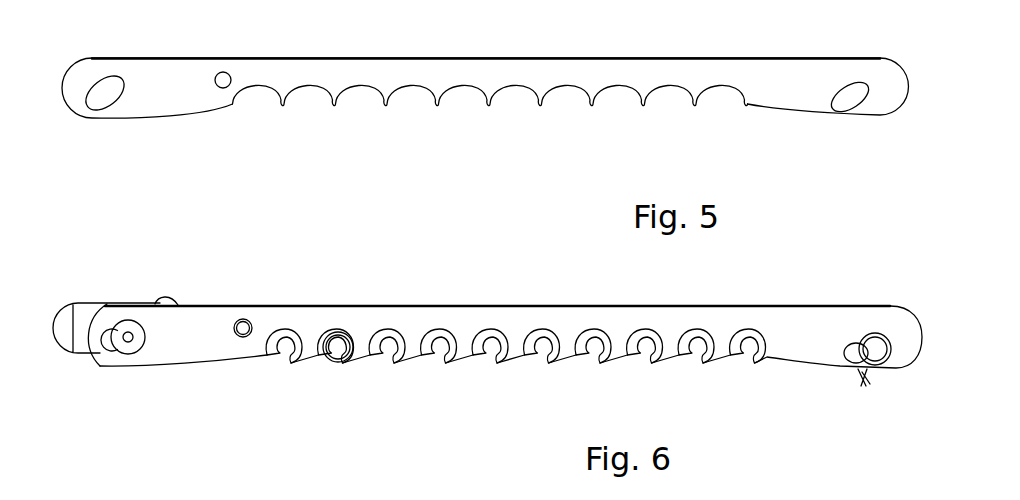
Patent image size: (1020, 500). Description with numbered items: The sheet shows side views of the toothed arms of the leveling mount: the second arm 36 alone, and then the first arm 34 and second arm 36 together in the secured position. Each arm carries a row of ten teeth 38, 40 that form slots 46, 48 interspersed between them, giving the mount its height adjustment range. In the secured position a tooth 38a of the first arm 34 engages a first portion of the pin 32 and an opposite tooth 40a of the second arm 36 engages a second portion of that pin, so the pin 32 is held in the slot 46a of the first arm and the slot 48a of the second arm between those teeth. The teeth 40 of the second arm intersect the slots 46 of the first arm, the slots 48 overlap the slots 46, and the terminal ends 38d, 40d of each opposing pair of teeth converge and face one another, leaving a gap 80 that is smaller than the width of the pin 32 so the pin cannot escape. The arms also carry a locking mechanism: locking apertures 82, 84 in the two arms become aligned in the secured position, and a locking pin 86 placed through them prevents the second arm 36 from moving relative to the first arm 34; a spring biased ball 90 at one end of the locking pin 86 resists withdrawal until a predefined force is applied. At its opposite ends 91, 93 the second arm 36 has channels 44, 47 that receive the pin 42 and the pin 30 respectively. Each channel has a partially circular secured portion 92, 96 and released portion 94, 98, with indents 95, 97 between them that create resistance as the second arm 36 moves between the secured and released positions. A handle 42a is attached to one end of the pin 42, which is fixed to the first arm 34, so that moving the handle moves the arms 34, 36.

In FIG. 6, the pin 30 is at (877, 356).
In FIG. 6, the pin 32 is at (333, 330).
In FIG. 6, the first arm 34 is at (258, 351).
In FIG. 5, the second arm 36 is at (155, 56).
In FIG. 6, the second arm 36 is at (554, 313).
In FIG. 6, the teeth 38 is at (278, 353).
In FIG. 6, the tooth 38a is at (322, 361).
In FIG. 6, the terminal end 38d is at (437, 363).
In FIG. 5, the teeth 40 is at (283, 106).
In FIG. 6, the teeth 40 is at (766, 358).
In FIG. 6, the tooth 40a is at (353, 340).
In FIG. 6, the terminal end 40d is at (453, 356).
In FIG. 6, the pin 42 is at (128, 350).
In FIG. 6, the handle 42a is at (137, 299).
In FIG. 6, the channel 44 is at (110, 318).
In FIG. 6, the slots 46 is at (283, 329).
In FIG. 6, the slot 46a is at (337, 329).
In FIG. 6, the channel 47 is at (855, 325).
In FIG. 5, the slots 48 is at (259, 103).
In FIG. 5, the slot 48a is at (312, 98).
In FIG. 6, the slot 48a is at (341, 333).
In FIG. 6, the gap 80 is at (396, 358).
In FIG. 5, the locking aperture 82 is at (229, 75).
In FIG. 6, the locking aperture 84 is at (241, 320).
In FIG. 6, the locking pin 86 is at (238, 324).
In FIG. 6, the spring biased ball 90 is at (236, 333).
In FIG. 6, the end 91 is at (92, 361).
In FIG. 5, the secured portion 92 is at (121, 100).
In FIG. 6, the end 93 is at (903, 370).
In FIG. 5, the released portion 94 is at (96, 110).
In FIG. 6, the released portion 94 is at (111, 353).
In FIG. 5, the indent 95 is at (98, 82).
In FIG. 5, the secured portion 96 is at (862, 108).
In FIG. 5, the indent 97 is at (112, 108).
In FIG. 5, the released portion 98 is at (848, 110).
In FIG. 6, the released portion 98 is at (850, 366).